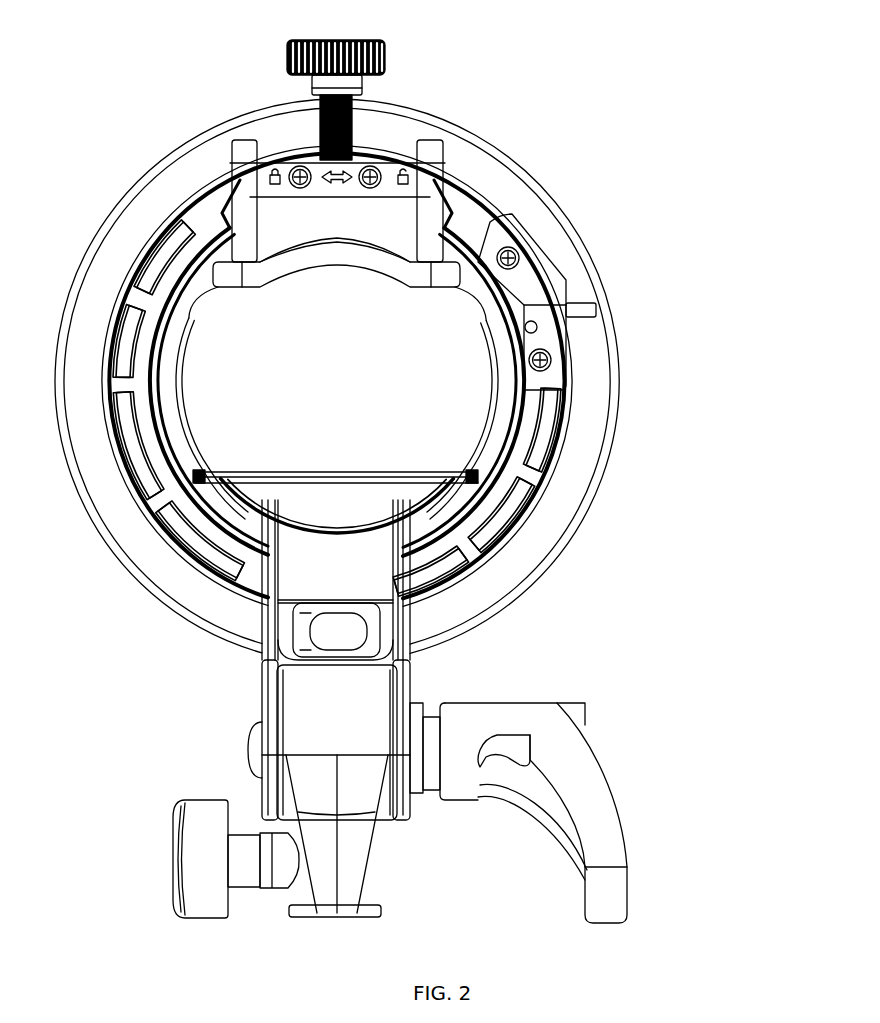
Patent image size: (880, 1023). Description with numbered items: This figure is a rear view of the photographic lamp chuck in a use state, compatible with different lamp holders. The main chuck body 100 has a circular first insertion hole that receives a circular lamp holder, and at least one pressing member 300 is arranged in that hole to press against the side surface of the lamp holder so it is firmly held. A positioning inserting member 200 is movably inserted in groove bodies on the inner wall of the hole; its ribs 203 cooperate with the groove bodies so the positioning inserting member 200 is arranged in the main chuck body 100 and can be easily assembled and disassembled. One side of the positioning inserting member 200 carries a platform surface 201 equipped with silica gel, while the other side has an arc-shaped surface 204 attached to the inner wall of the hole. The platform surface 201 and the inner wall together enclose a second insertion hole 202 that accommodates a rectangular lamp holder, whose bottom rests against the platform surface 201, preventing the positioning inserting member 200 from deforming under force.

The main chuck body 100 is at (458, 163).
The pressing member 300 is at (392, 265).
The second insertion hole 202 is at (380, 358).
The platform surface 201 is at (381, 468).
The positioning inserting member 200 is at (367, 493).
The ribs 203 is at (375, 518).
The arc-shaped surface 204 is at (372, 527).